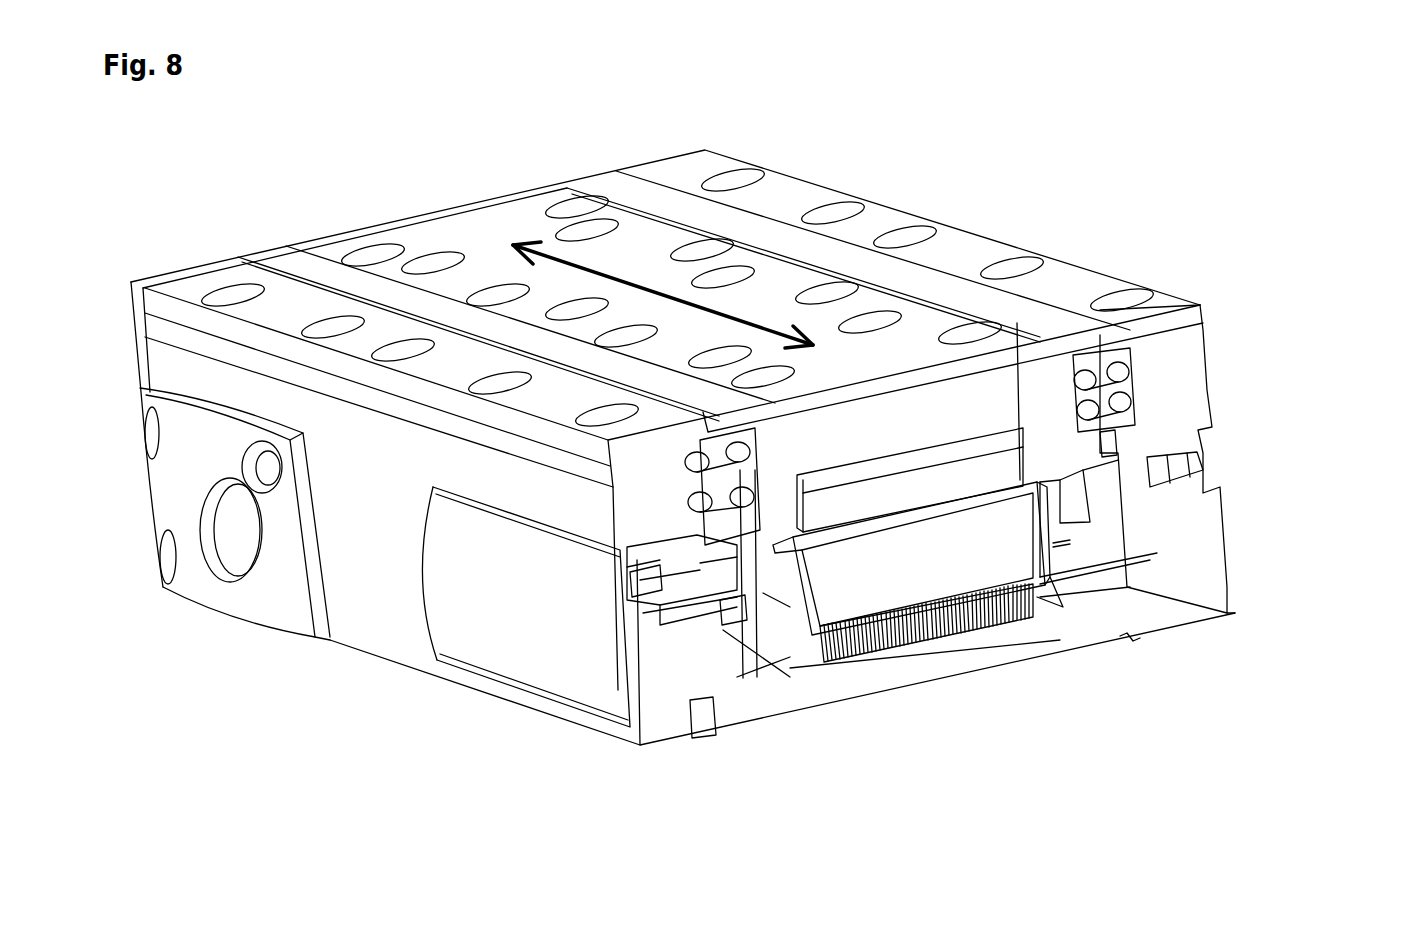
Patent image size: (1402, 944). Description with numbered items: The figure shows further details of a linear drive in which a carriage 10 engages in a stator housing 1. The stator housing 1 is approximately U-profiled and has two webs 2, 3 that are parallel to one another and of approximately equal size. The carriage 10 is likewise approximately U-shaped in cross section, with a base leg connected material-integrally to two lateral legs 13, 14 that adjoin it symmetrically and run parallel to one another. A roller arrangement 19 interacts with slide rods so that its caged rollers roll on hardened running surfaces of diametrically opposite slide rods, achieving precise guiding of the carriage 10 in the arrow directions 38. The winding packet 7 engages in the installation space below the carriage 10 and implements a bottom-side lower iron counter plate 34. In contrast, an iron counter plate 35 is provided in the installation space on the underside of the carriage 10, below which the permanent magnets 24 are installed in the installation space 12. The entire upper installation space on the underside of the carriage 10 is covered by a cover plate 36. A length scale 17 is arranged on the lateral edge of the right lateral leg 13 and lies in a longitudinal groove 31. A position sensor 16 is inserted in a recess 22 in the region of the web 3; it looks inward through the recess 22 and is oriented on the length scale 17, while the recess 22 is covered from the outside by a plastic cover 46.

The stator housing 1 is at (1053, 658).
The web 2 is at (875, 217).
The web 3 is at (379, 328).
The winding packet 7 is at (913, 578).
The carriage 10 is at (765, 293).
The installation space 12 is at (888, 470).
The lateral leg 13 is at (763, 563).
The lateral leg 14 is at (1072, 497).
The position sensor 16 is at (688, 578).
The length scale 17 is at (735, 548).
The roller arrangement 19 is at (1122, 383).
The recess 22 is at (645, 570).
The permanent magnets 24 is at (943, 488).
The longitudinal groove 31 is at (750, 560).
The lower iron counter plate 34 is at (858, 647).
The iron counter plate 35 is at (915, 463).
The cover plate 36 is at (965, 500).
The arrow directions 38 is at (662, 290).
The plastic cover 46 is at (500, 593).